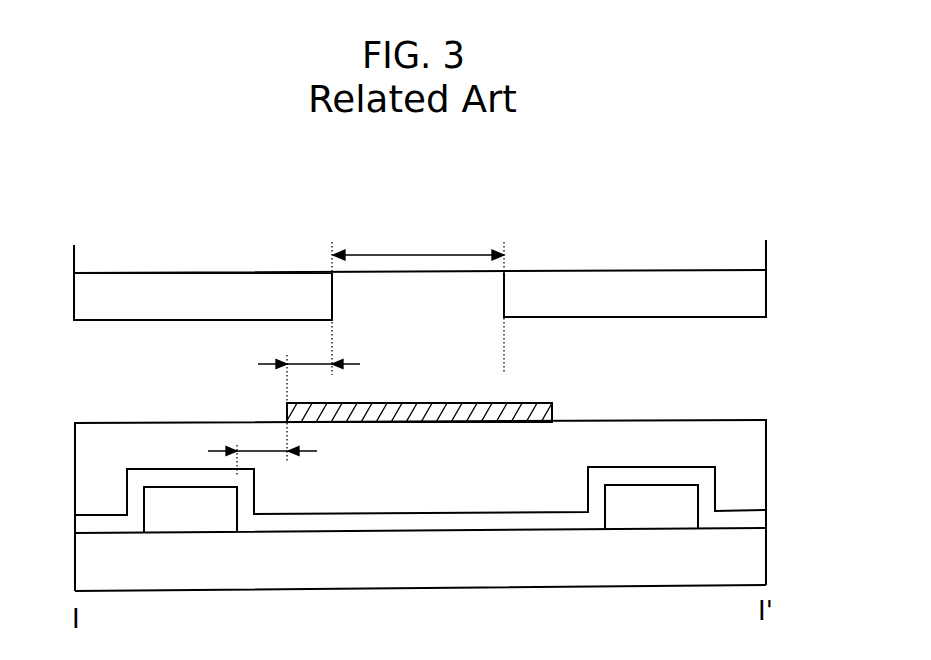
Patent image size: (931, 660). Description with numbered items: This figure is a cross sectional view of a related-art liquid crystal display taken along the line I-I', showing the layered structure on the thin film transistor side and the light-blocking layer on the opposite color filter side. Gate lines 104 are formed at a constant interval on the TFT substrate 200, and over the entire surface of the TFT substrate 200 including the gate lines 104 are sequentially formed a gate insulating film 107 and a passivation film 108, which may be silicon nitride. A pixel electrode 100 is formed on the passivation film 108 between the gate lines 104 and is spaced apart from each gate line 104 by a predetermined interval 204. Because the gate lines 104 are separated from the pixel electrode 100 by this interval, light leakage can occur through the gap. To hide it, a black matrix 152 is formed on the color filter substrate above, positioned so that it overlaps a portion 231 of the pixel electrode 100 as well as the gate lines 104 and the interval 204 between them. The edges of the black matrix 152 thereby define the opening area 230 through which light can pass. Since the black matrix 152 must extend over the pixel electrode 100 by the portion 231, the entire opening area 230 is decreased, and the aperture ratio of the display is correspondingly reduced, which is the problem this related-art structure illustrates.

The pixel electrode 100 is at (535, 410).
The gate line 104 is at (177, 520).
The gate insulating film 107 is at (757, 520).
The passivation film 108 is at (757, 469).
The black matrix 152 is at (757, 295).
The TFT substrate 200 is at (757, 557).
The predetermined interval 204 is at (262, 451).
The opening area 230 is at (418, 255).
The overlapped portion of the pixel electrode 231 is at (310, 364).